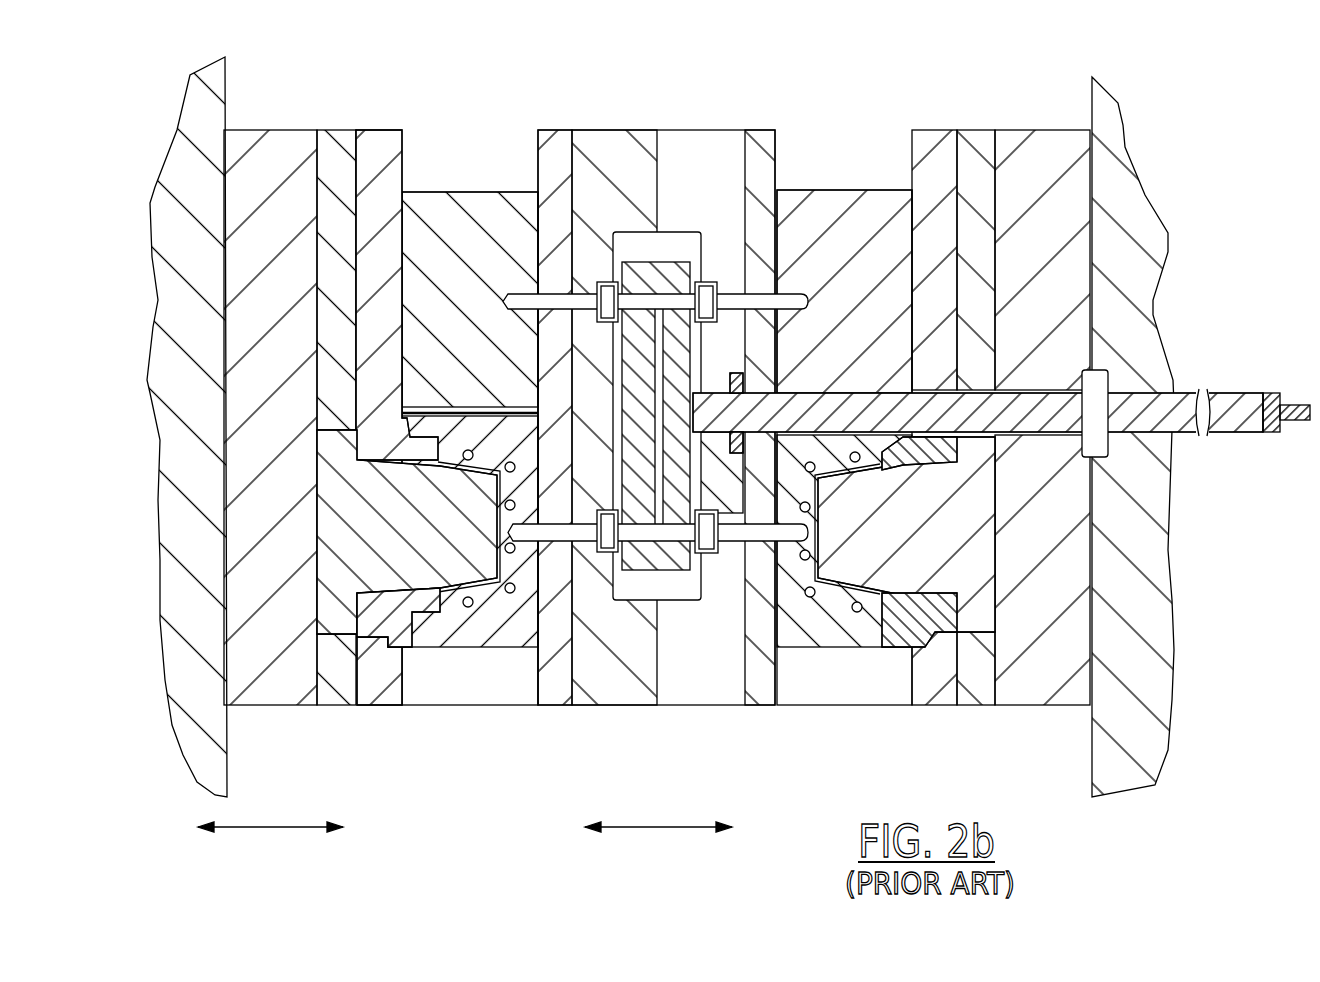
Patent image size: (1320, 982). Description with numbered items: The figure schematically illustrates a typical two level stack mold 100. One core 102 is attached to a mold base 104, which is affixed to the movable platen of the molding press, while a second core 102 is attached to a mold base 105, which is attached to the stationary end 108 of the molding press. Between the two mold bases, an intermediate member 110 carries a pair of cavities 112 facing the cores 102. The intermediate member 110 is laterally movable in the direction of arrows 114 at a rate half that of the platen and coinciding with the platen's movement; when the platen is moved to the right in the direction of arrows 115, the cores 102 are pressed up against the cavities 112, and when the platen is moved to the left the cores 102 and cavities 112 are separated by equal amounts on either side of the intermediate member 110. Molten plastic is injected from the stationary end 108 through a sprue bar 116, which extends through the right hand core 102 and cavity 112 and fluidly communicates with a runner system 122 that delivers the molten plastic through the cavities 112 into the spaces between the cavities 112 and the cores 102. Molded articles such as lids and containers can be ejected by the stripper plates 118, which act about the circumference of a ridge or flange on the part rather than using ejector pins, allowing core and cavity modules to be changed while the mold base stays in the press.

The two level stack mold 100 is at (890, 48).
The core 102 is at (418, 578).
The mold base 104 is at (280, 712).
The mold base 105 is at (1043, 688).
The stationary end 108 is at (1152, 590).
The intermediate member 110 is at (775, 113).
The cavity 112 is at (481, 622).
The arrows 114 is at (653, 829).
The arrows 115 is at (272, 829).
The sprue bar 116 is at (1015, 410).
The stripper plates 118 is at (378, 150).
The runner system 122 is at (645, 360).